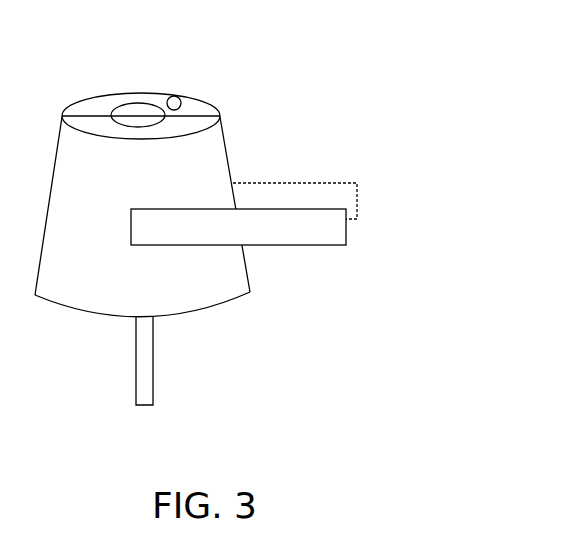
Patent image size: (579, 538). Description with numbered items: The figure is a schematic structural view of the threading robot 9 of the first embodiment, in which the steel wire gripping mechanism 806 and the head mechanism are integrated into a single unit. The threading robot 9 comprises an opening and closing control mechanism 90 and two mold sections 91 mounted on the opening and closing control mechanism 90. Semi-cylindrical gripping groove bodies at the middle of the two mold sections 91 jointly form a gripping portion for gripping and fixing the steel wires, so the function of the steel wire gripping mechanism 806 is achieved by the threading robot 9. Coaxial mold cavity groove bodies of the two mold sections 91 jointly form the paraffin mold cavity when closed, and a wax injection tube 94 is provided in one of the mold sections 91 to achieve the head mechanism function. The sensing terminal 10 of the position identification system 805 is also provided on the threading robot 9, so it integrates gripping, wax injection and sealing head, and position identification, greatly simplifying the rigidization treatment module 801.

The sensing terminal 10 is at (176, 97).
The position identification system 805 is at (455, 124).
The threading robot 9 is at (288, 199).
The steel wire gripping mechanism 806 is at (483, 191).
The opening and closing control mechanism 90 is at (283, 222).
The mold section 91 is at (187, 175).
The rigidization treatment module 801 is at (508, 215).
The wax injection tube 94 is at (145, 391).